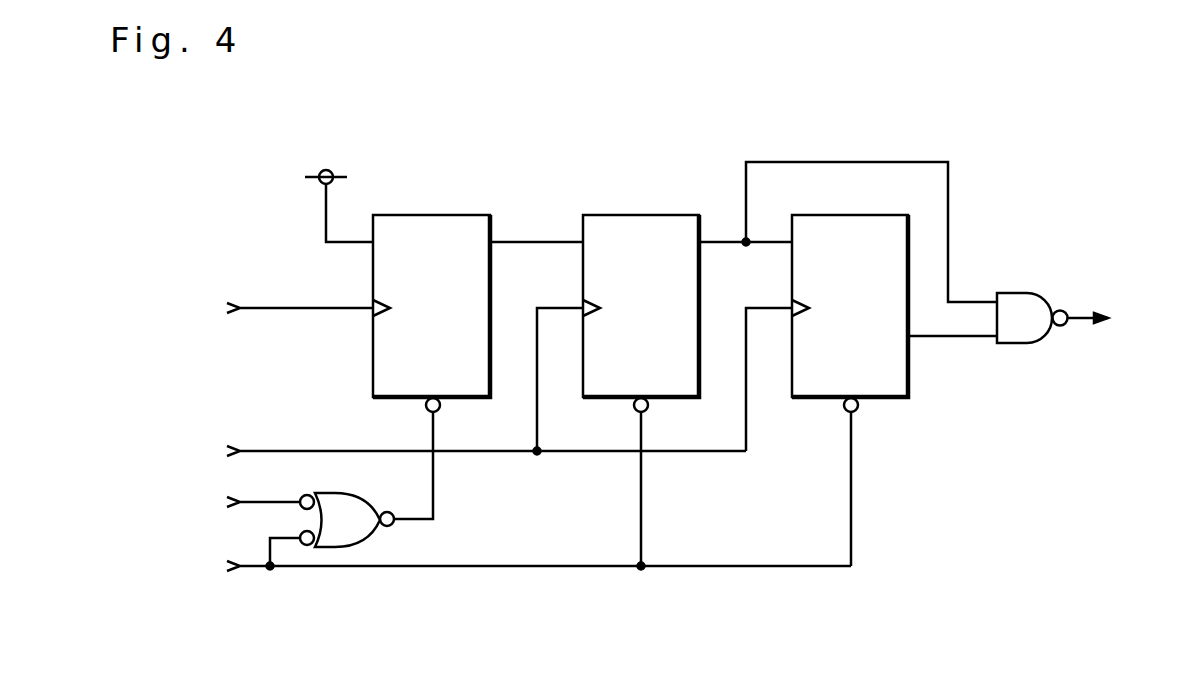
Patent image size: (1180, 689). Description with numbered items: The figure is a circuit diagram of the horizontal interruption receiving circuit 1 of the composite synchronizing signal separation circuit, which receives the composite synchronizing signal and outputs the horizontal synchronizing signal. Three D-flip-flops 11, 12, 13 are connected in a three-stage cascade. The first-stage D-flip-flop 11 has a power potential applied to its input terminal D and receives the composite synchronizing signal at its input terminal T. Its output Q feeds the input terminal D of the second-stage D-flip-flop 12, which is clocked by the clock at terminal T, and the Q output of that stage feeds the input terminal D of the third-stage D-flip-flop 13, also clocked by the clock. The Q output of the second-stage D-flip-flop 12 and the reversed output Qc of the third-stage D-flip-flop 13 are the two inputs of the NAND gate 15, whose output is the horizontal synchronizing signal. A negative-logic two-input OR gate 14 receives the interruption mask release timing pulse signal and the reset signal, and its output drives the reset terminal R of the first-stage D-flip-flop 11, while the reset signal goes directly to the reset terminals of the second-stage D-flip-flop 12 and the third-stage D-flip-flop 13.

The horizontal interruption receiving circuit 1 is at (1055, 114).
The first-stage D-flip-flop 11 is at (422, 215).
The second-stage D-flip-flop 12 is at (633, 213).
The third-stage D-flip-flop 13 is at (910, 378).
The two-input OR gate 14 is at (353, 533).
The two-input NAND gate 15 is at (1013, 290).